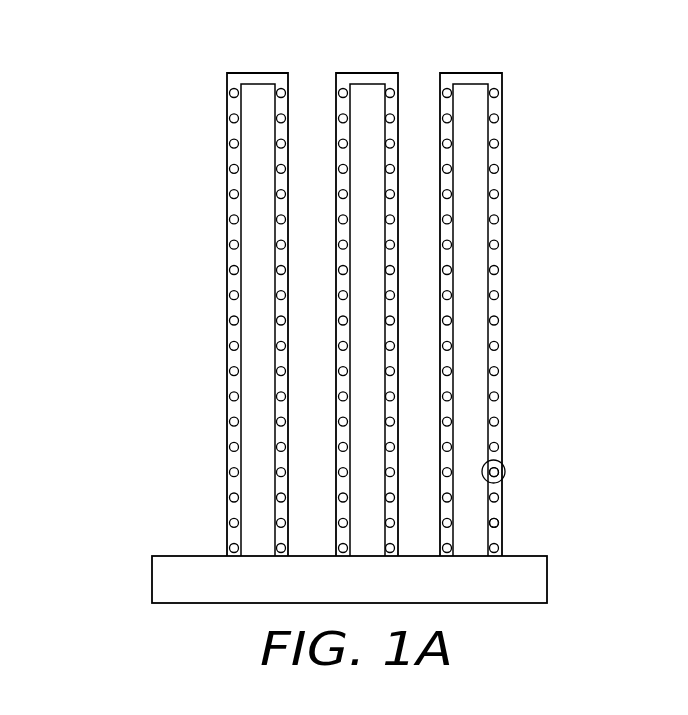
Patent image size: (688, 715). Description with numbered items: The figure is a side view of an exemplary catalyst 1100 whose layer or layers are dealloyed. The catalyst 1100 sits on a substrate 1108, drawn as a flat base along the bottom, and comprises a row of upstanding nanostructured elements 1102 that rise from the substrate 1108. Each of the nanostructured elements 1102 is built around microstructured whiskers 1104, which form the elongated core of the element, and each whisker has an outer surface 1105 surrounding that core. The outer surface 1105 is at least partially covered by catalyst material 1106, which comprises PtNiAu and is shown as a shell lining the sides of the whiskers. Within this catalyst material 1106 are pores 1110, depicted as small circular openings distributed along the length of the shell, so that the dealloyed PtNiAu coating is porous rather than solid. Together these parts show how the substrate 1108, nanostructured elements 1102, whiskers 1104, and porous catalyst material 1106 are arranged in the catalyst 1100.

The catalyst 1100 is at (130, 57).
The nanostructured elements 1102 is at (503, 128).
The microstructured whiskers 1104 is at (472, 252).
The outer surface 1105 is at (500, 333).
The catalyst material 1106 is at (505, 471).
The substrate 1108 is at (547, 575).
The pores 1110 is at (498, 522).